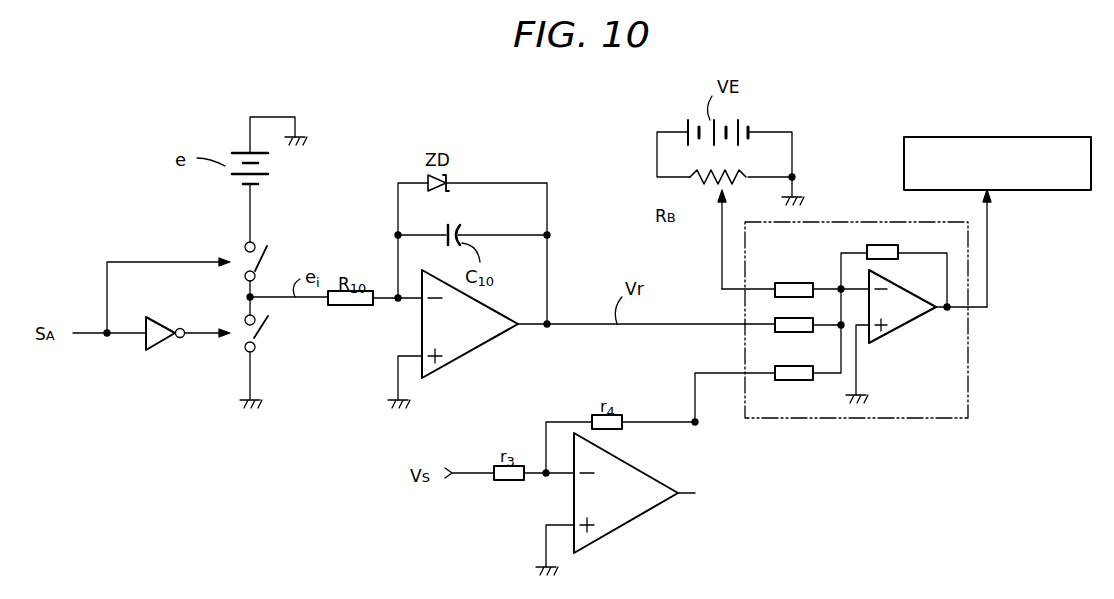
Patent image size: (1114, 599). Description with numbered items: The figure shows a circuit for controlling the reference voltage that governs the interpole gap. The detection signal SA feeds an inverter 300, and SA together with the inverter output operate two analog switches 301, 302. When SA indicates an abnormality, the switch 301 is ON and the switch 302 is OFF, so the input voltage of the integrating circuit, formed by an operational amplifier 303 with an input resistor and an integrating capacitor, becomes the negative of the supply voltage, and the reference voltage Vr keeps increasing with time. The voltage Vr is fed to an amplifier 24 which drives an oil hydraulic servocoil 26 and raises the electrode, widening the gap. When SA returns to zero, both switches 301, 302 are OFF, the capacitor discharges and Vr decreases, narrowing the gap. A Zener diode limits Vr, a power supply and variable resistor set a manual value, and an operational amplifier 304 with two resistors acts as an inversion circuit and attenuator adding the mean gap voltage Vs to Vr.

The inverter 300 is at (160, 345).
The analog switch 301 is at (268, 263).
The analog switch 302 is at (268, 330).
The operational amplifier 303 is at (470, 352).
The operational amplifier 304 is at (650, 512).
The amplifier 24 is at (872, 418).
The oil hydraulic servocoil 26 is at (964, 137).